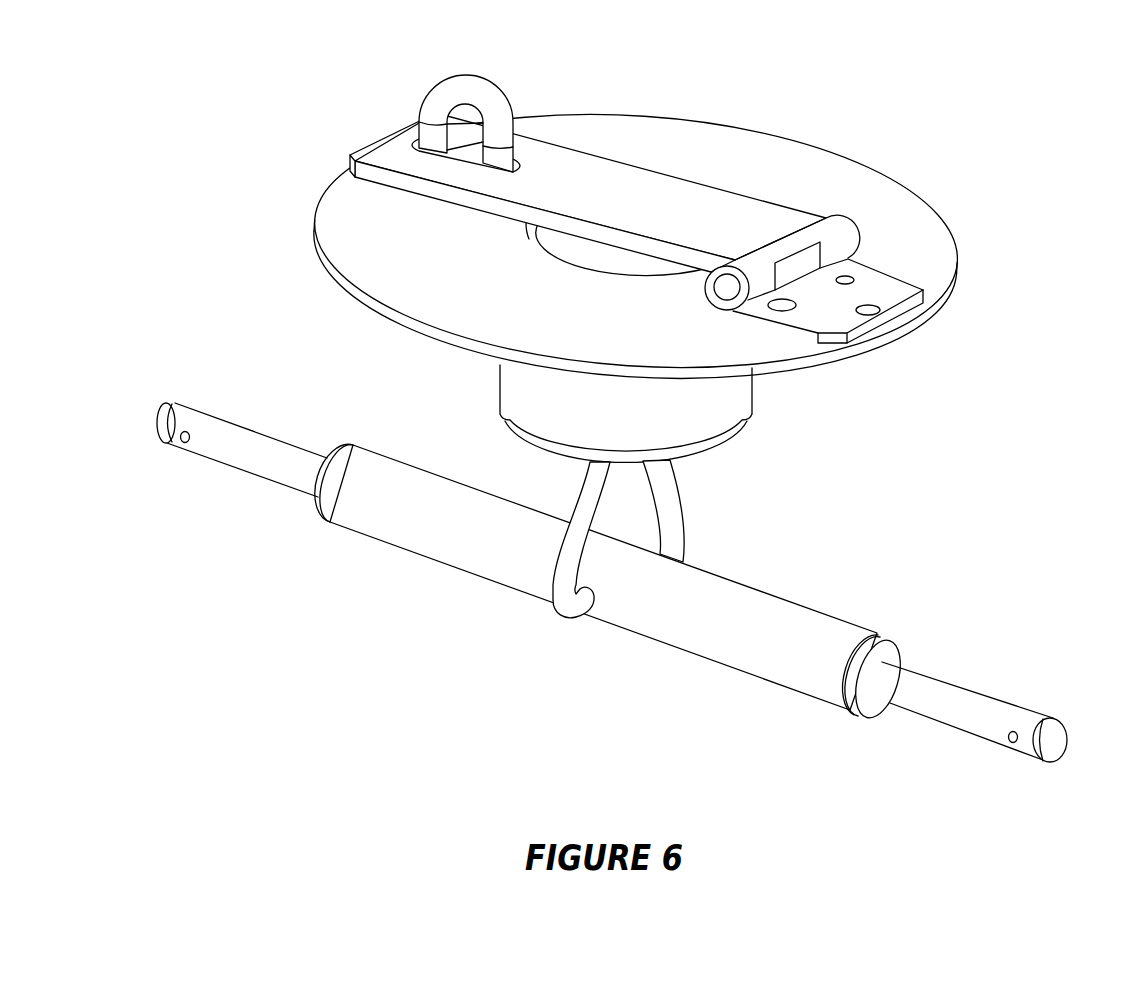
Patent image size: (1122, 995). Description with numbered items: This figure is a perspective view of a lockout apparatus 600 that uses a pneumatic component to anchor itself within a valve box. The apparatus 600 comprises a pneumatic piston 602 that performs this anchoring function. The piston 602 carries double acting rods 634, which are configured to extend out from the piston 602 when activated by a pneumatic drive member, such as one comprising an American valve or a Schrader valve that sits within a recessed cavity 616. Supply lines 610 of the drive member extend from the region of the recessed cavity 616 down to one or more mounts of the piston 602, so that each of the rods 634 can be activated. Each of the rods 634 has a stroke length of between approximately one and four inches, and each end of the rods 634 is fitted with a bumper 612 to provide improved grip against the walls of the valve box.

The lockout apparatus 600 is at (633, 405).
The pneumatic piston 602 is at (728, 634).
The supply lines 610 is at (603, 577).
The bumper 612 is at (170, 402).
The recessed cavity 616 is at (752, 402).
The double acting rods 634 is at (253, 428).